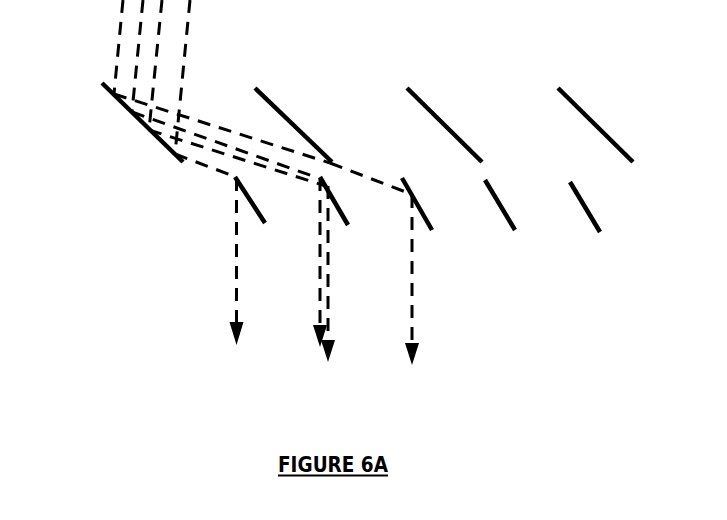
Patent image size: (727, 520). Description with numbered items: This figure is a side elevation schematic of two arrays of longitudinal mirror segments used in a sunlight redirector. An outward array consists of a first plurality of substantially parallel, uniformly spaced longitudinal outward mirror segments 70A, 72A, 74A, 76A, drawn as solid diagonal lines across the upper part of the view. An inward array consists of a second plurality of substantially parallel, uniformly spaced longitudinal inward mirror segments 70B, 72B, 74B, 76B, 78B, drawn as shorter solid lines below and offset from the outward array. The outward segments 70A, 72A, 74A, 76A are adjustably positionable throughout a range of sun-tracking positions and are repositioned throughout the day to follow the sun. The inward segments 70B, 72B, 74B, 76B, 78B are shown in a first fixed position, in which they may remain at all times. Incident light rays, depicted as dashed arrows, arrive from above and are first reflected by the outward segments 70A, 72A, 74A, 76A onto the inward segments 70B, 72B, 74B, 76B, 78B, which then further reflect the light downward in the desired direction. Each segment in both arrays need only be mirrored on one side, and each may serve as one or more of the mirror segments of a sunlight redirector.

The longitudinal outward mirror segment 70A is at (104, 88).
The longitudinal outward mirror segment 72A is at (255, 88).
The longitudinal outward mirror segment 74A is at (407, 87).
The longitudinal outward mirror segment 76A is at (577, 103).
The longitudinal inward mirror segment 70B is at (265, 223).
The longitudinal inward mirror segment 72B is at (348, 225).
The longitudinal inward mirror segment 74B is at (432, 230).
The longitudinal inward mirror segment 76B is at (515, 230).
The longitudinal inward mirror segment 78B is at (600, 232).